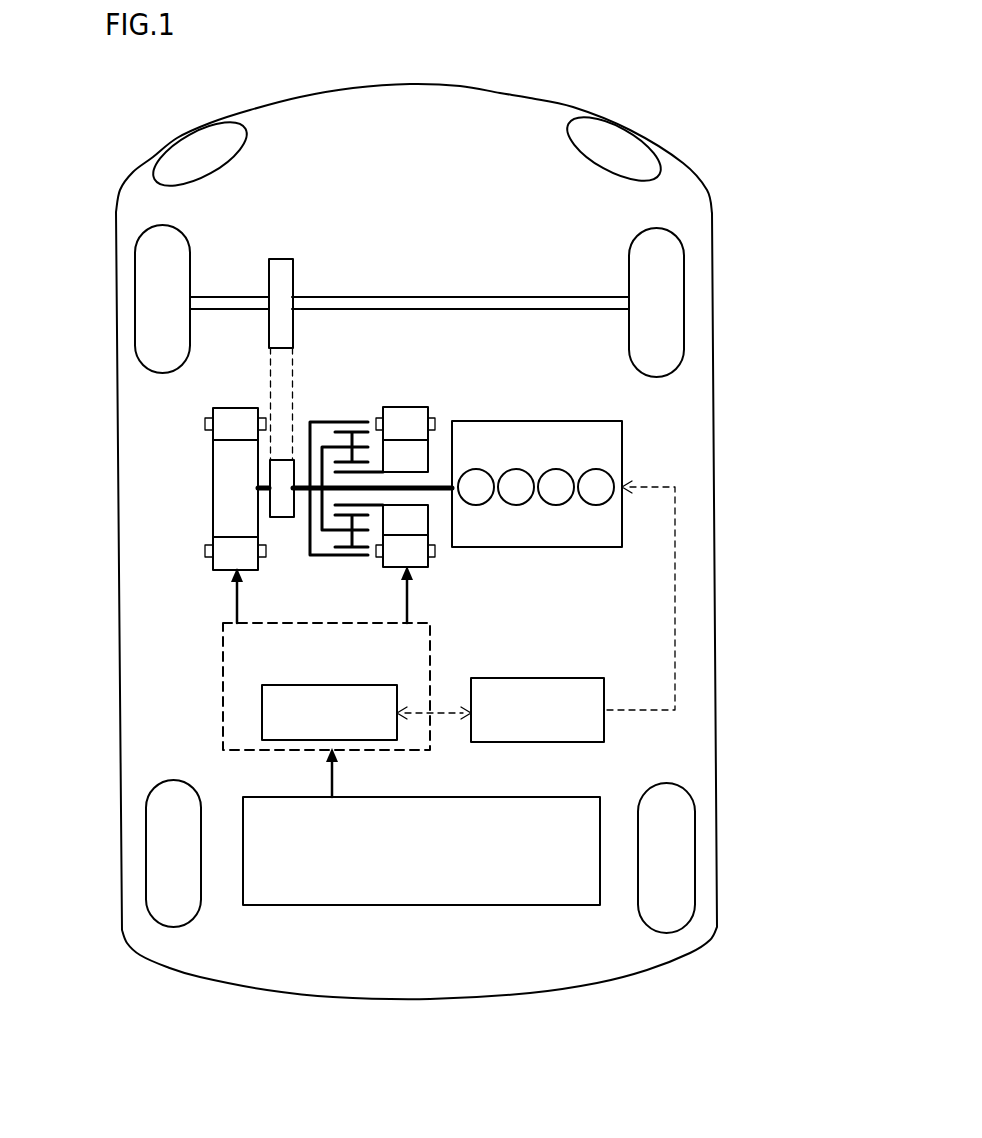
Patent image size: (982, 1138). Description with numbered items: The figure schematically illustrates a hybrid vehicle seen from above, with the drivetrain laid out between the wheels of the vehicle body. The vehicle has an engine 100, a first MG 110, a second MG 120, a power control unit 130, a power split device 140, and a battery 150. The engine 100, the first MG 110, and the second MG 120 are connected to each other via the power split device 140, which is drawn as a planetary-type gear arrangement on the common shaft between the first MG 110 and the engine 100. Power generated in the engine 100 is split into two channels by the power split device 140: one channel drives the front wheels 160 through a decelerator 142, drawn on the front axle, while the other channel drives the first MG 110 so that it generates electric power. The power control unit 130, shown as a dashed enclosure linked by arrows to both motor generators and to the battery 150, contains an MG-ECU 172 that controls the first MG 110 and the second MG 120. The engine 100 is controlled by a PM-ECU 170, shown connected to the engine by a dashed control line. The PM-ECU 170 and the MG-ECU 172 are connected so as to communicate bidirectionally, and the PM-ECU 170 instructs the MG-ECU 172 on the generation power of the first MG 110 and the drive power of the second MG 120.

The engine 100 is at (487, 421).
The first motor generator 110 is at (408, 407).
The second motor generator 120 is at (212, 488).
The power control unit 130 is at (223, 653).
The power split device 140 is at (340, 422).
The decelerator 142 is at (278, 246).
The battery 150 is at (393, 905).
The front wheels 160 is at (135, 310).
The PM-ECU 170 is at (537, 742).
The MG-ECU 172 is at (262, 717).